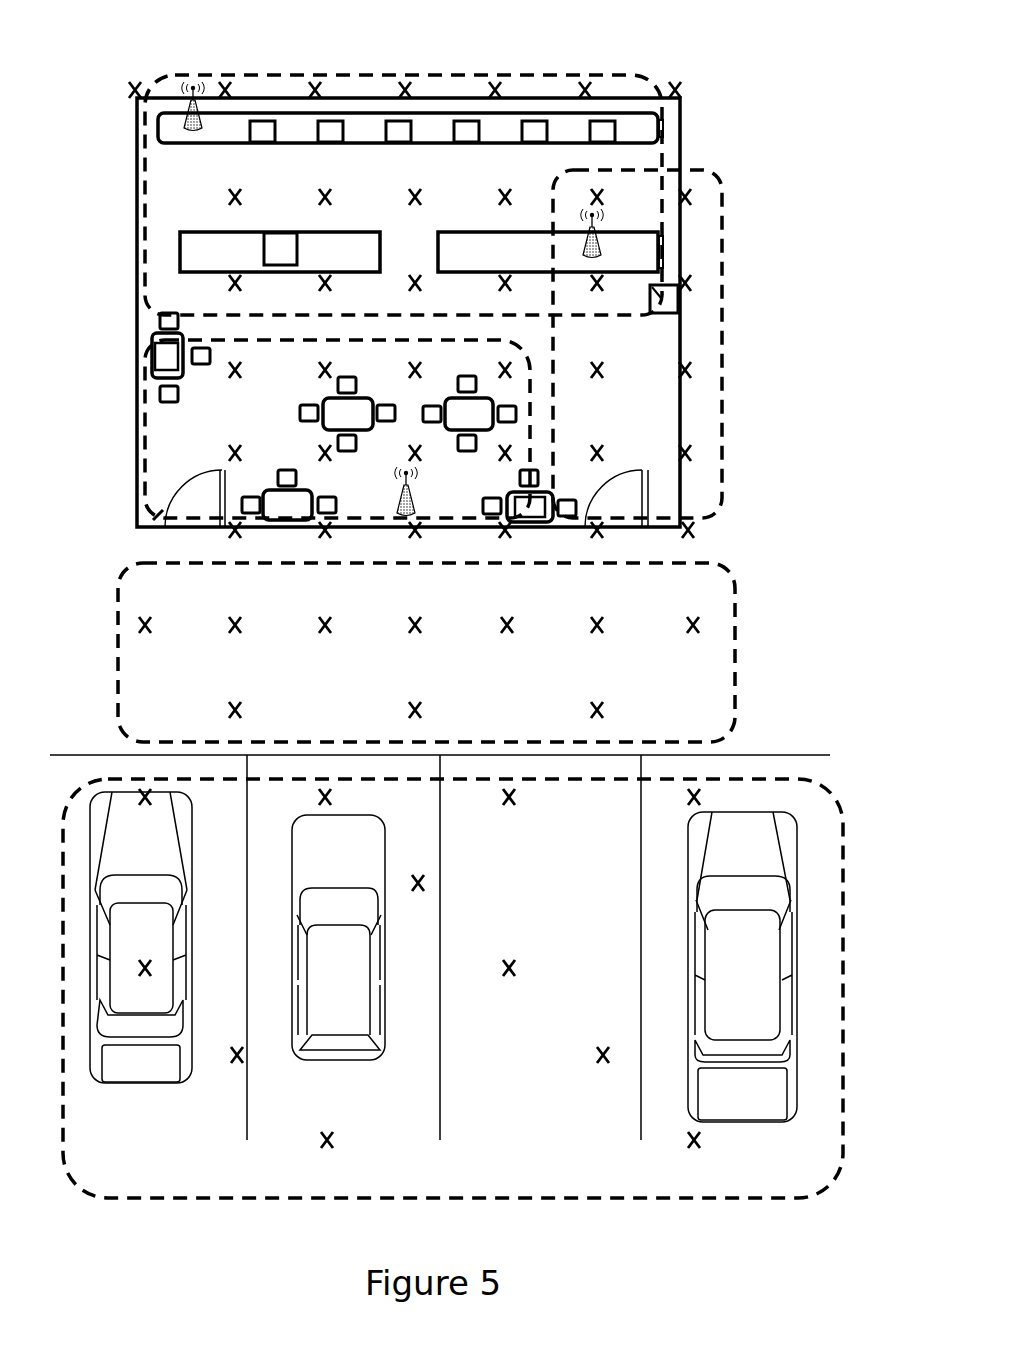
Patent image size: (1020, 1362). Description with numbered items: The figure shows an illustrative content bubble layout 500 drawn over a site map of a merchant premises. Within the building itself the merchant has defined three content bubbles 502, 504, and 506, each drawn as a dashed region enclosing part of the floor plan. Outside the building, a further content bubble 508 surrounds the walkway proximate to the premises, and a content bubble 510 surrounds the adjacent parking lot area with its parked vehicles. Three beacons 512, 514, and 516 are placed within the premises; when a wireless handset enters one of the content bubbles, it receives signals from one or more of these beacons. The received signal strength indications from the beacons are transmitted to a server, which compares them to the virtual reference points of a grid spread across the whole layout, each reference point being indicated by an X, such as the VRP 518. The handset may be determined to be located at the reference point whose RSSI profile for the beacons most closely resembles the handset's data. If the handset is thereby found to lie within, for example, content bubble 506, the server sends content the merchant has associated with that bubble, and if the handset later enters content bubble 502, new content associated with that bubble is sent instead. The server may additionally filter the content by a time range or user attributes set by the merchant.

The content bubble layout 500 is at (124, 56).
The content bubble 502 is at (636, 76).
The content bubble 504 is at (140, 410).
The content bubble 506 is at (725, 415).
The content bubble 508 is at (737, 636).
The content bubble 510 is at (845, 940).
The beacon 512 is at (200, 100).
The beacon 514 is at (600, 245).
The beacon 516 is at (418, 514).
The VRP 518 is at (242, 203).